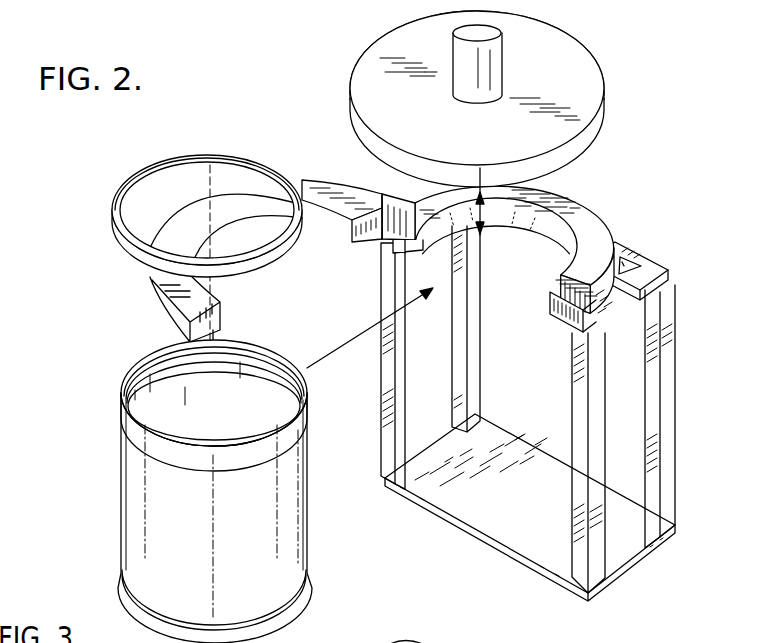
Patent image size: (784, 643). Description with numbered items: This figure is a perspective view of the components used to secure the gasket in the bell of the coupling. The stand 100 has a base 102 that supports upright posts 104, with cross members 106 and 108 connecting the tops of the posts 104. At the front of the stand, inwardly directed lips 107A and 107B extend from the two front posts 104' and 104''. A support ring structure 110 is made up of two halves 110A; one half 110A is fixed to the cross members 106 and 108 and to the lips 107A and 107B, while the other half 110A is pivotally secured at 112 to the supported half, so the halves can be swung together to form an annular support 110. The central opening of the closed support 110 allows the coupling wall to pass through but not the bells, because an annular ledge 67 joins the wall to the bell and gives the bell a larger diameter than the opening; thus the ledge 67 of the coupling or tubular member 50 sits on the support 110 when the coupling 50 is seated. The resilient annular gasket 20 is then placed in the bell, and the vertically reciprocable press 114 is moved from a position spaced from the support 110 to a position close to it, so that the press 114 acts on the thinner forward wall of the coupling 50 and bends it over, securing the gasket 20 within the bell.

The resilient annular gasket 20 is at (115, 202).
The coupling or tubular member 50 is at (125, 480).
The ledge 67 is at (292, 448).
The stand 100 is at (665, 392).
The base 102 is at (622, 553).
The upright posts 104 is at (639, 416).
The post 104' is at (564, 463).
The post 104'' is at (416, 366).
The cross member 106 is at (641, 266).
The inwardly directed lip 107A is at (572, 348).
The inwardly directed lip 107B is at (403, 248).
The cross member 108 is at (622, 262).
The support ring structure 110 is at (617, 233).
The half of support ring structure 110A is at (576, 190).
The pivot 112 is at (382, 192).
The press 114 is at (588, 52).